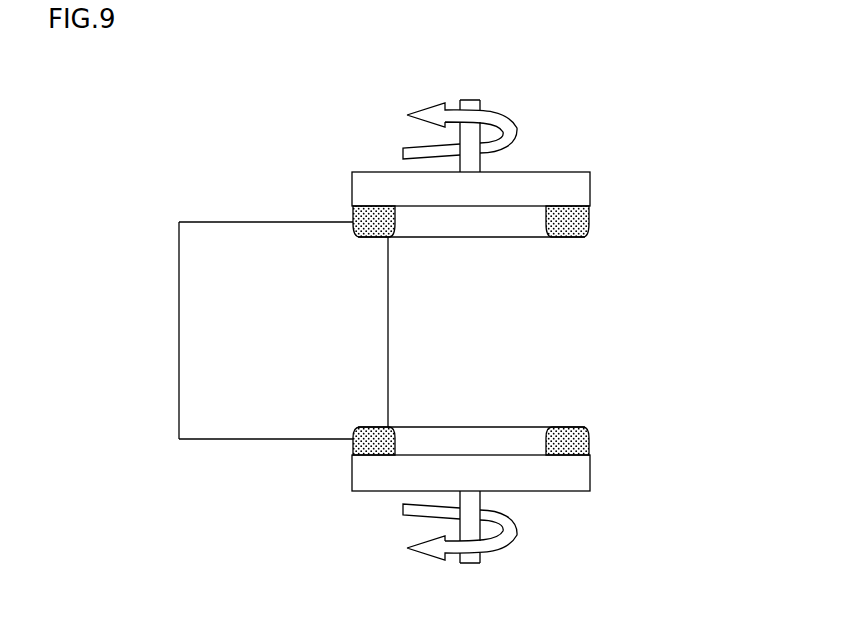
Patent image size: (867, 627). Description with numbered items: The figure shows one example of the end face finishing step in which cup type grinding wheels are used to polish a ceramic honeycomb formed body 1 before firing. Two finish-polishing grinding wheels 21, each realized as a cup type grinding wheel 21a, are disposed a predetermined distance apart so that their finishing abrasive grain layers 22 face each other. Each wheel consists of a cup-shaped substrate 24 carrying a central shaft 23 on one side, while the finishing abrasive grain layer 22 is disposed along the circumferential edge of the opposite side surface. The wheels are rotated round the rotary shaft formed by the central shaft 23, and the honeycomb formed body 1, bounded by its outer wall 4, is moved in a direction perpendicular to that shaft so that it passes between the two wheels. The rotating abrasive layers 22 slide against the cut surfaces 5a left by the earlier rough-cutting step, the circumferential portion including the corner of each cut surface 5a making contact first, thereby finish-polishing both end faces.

The honeycomb formed body 1 is at (195, 267).
The outer wall 4 is at (179, 387).
The cut surface 5a is at (212, 222).
The finish-polishing grinding wheel 21 is at (565, 172).
The cup type grinding wheel 21a is at (517, 332).
The finishing abrasive grain layer 22 is at (352, 230).
The central shaft 23 is at (479, 100).
The cup-shaped substrate 24 is at (573, 194).